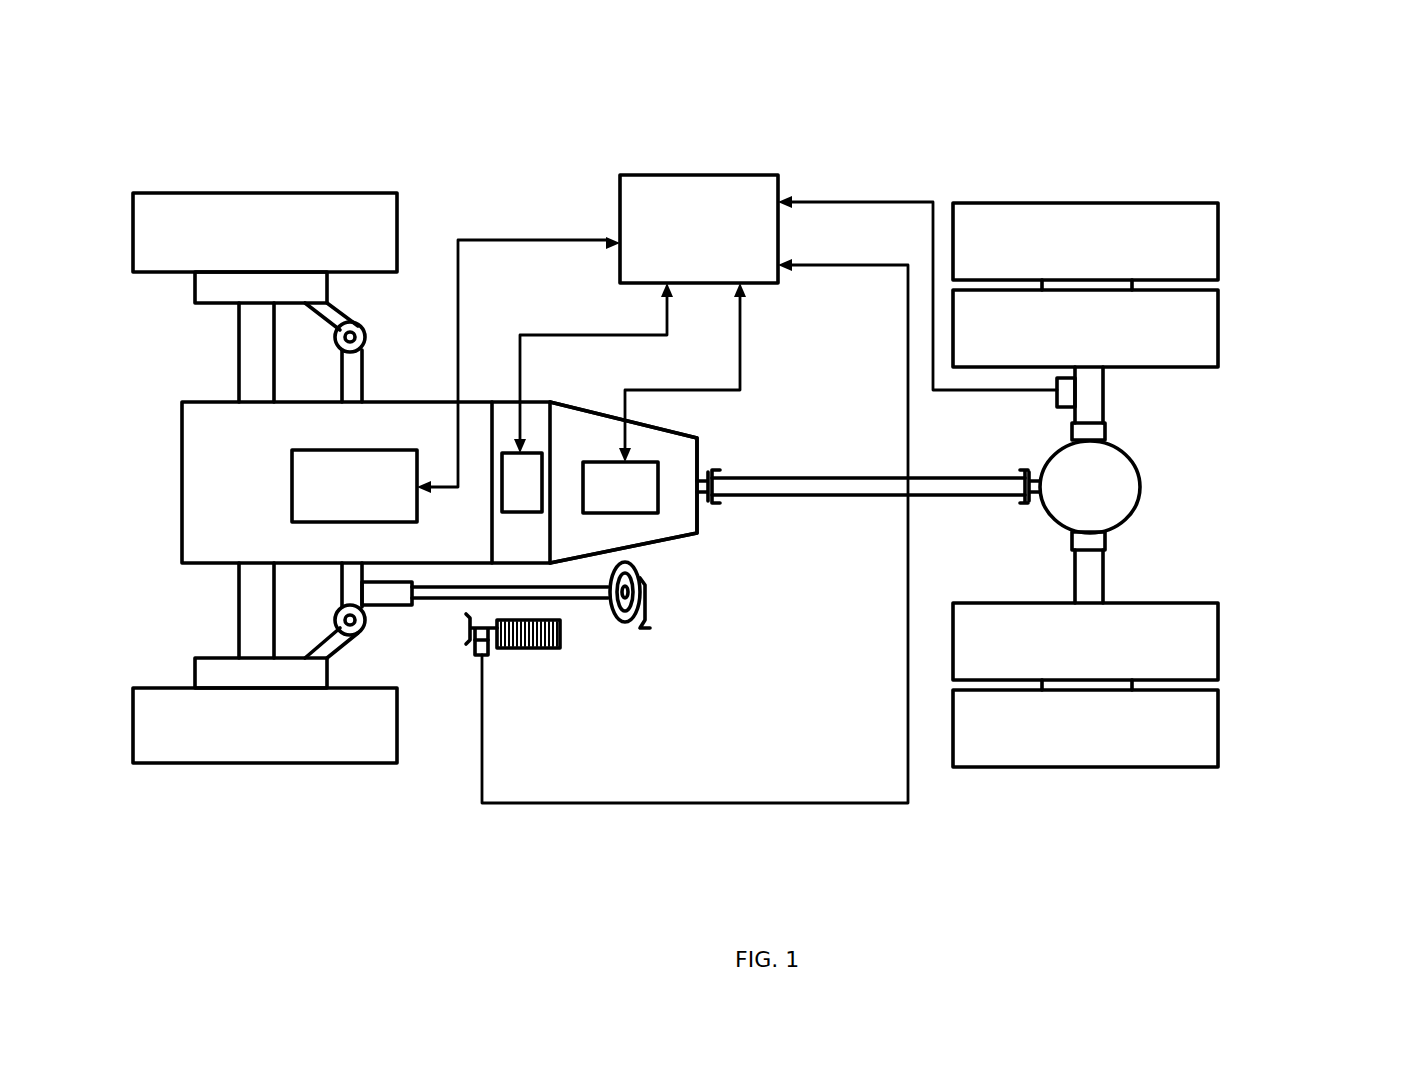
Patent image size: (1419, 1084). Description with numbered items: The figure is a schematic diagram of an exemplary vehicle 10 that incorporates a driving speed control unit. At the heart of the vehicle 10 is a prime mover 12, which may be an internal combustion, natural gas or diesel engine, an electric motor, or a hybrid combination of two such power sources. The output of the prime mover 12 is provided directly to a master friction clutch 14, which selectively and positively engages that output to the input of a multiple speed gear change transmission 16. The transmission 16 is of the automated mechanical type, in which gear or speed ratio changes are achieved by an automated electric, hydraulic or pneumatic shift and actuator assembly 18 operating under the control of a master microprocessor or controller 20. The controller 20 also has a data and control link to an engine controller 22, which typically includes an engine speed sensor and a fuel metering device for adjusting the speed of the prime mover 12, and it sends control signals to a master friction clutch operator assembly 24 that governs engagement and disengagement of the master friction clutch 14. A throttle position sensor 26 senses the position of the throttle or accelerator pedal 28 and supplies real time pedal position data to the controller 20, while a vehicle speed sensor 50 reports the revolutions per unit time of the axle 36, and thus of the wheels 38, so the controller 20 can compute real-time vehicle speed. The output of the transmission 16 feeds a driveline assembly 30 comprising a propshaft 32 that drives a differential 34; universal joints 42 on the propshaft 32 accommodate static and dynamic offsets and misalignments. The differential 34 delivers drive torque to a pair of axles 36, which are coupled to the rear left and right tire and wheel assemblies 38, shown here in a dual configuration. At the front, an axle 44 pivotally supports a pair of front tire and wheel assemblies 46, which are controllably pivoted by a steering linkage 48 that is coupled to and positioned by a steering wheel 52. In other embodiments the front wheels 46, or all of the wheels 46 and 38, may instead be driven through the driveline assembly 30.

The vehicle 10 is at (1050, 113).
The prime mover 12 is at (195, 540).
The master friction clutch 14 is at (540, 418).
The multiple speed gear change transmission 16 is at (672, 515).
The shift and actuator assembly 18 is at (618, 490).
The master microprocessor or controller 20 is at (701, 172).
The engine controller 22 is at (352, 487).
The master friction clutch operator assembly 24 is at (520, 485).
The throttle position sensor 26 is at (490, 655).
The throttle pedal 28 is at (560, 635).
The driveline assembly 30 is at (1040, 828).
The propshaft 32 is at (925, 476).
The differential 34 is at (1110, 487).
The axle 36 is at (1093, 392).
The rear tire and wheel assembly 38 is at (1272, 312).
The universal joint 42 is at (722, 478).
The axle 44 is at (250, 388).
The front tire and wheel assembly 46 is at (301, 188).
The steering linkage 48 is at (380, 628).
The vehicle speed sensor 50 is at (1052, 398).
The steering wheel 52 is at (541, 605).